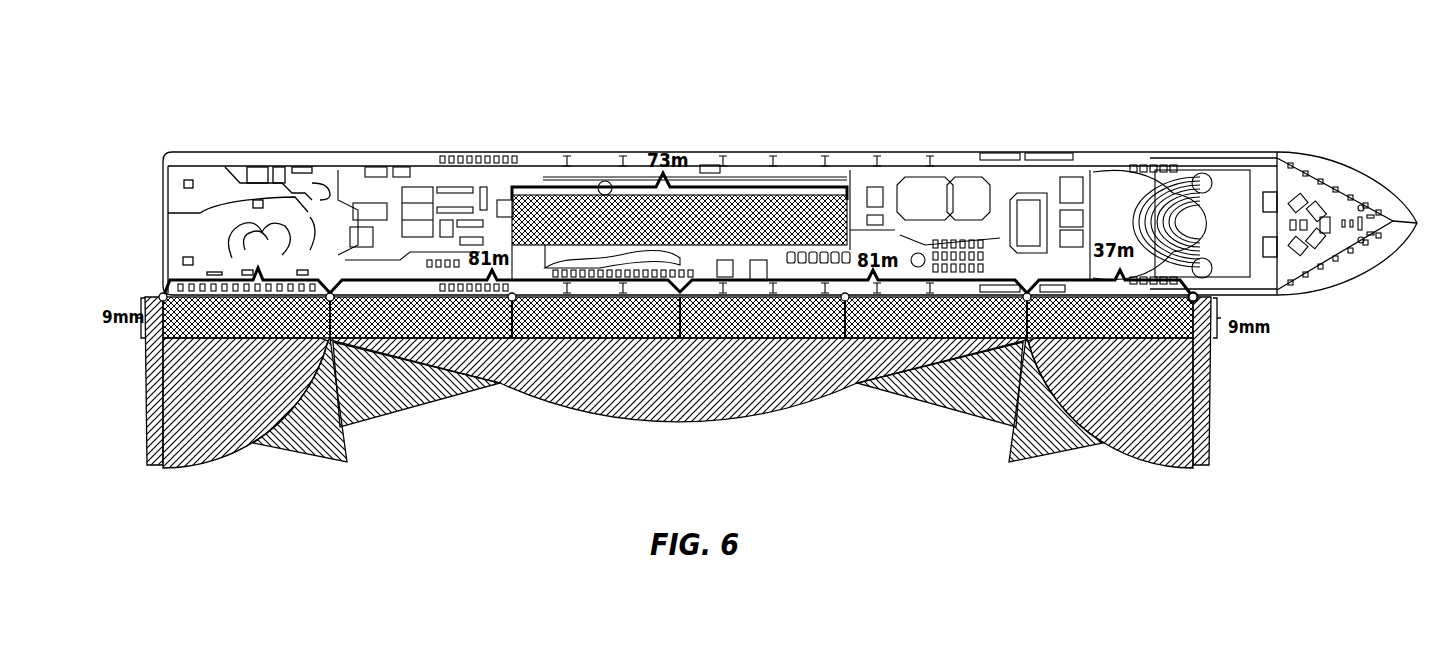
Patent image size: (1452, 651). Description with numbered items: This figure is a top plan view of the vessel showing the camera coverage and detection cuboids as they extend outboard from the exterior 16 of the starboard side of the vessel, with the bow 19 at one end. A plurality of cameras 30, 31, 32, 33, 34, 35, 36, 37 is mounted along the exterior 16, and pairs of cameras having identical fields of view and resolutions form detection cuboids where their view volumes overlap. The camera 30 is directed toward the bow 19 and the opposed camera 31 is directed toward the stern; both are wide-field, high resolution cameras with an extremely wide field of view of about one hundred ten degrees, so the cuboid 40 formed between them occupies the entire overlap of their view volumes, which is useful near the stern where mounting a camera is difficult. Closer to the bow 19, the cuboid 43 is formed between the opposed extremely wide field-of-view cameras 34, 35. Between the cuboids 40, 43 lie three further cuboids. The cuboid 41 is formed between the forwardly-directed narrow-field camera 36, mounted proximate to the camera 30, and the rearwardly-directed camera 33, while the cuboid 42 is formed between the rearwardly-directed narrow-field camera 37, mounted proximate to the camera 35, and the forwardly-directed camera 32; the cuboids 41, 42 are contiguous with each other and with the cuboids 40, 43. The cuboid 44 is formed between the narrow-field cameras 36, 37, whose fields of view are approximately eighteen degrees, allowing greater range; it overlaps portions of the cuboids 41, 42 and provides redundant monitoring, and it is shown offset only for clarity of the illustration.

The exterior 16 is at (977, 150).
The bow 19 is at (1407, 240).
The camera 30 is at (163, 297).
The camera 31 is at (330, 297).
The camera 32 is at (512, 297).
The camera 33 is at (845, 297).
The camera 34 is at (1027, 297).
The camera 35 is at (1193, 297).
The narrow-field camera 36 is at (166, 293).
The narrow-field camera 37 is at (1193, 297).
The cuboid 40 is at (260, 343).
The cuboid 41 is at (473, 340).
The cuboid 42 is at (930, 340).
The cuboid 43 is at (1168, 388).
The cuboid 44 is at (735, 250).